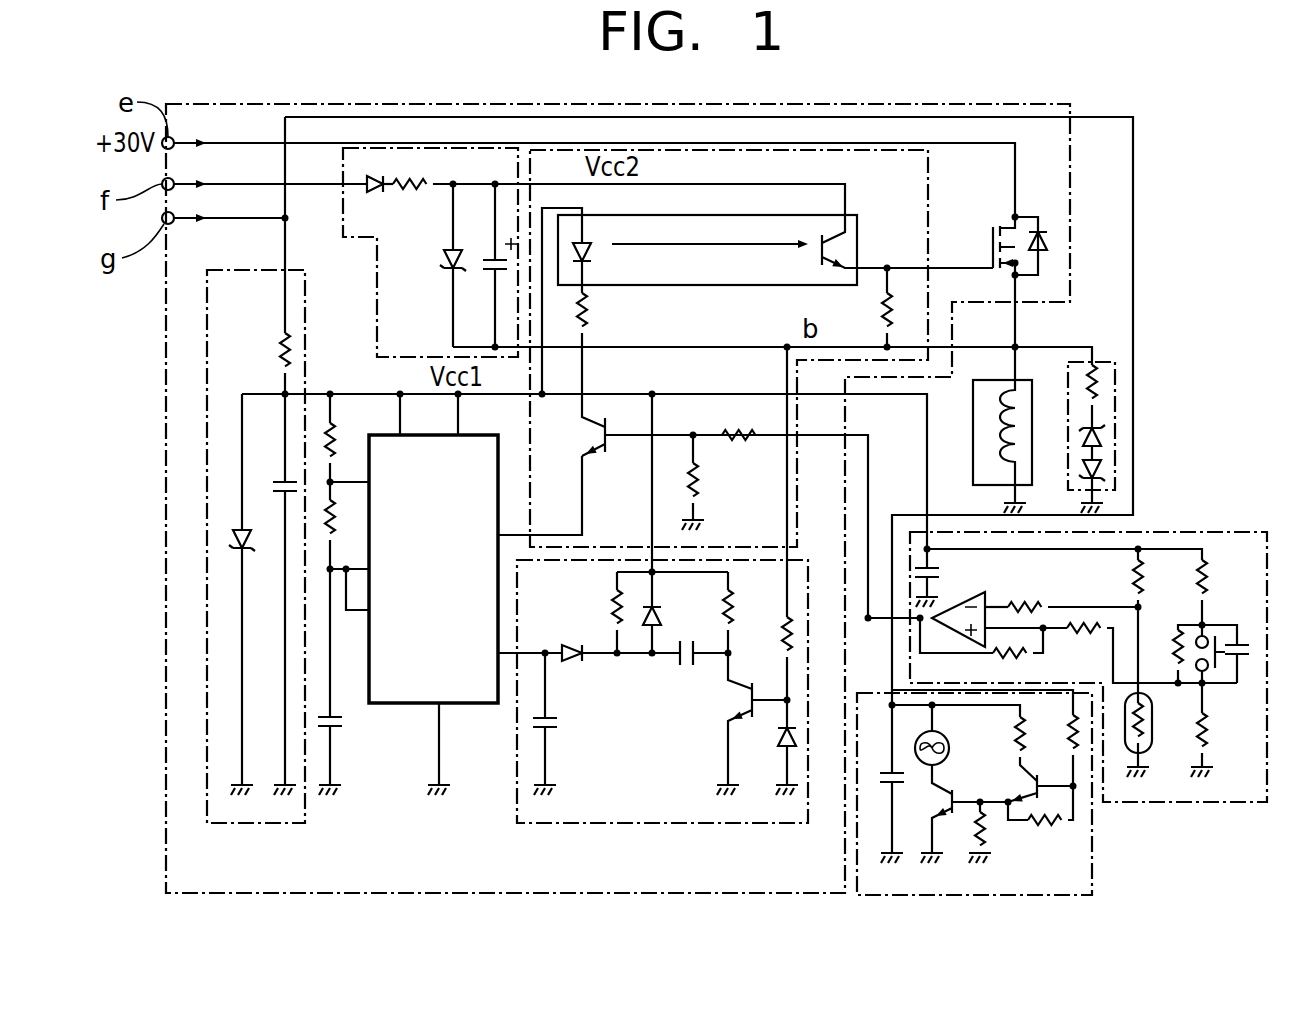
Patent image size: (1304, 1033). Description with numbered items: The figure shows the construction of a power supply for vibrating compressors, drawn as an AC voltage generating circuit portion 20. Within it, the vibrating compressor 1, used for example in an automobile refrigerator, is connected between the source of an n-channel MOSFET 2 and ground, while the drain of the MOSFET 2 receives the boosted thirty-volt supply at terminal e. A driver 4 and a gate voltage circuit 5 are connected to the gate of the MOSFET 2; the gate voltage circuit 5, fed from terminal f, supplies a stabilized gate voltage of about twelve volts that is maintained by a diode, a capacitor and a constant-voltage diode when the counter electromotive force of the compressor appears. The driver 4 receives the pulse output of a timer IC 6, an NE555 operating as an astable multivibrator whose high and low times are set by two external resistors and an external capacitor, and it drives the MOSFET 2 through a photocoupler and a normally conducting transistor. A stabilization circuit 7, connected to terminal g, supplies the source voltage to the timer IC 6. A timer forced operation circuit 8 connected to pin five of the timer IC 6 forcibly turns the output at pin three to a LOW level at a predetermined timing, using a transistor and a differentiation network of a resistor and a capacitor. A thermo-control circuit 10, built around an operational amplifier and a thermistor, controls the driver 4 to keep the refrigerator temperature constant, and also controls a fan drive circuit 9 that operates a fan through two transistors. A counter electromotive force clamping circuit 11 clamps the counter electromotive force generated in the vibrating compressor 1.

The vibrating compressor 1 is at (973, 420).
The MOSFET 2 is at (1022, 216).
The driver 4 is at (928, 176).
The gate voltage circuit 5 is at (377, 352).
The timer IC 6 is at (498, 436).
The stabilization circuit 7 is at (238, 272).
The timer forced operation circuit 8 is at (517, 806).
The fan drive circuit 9 is at (1092, 872).
The thermo-control circuit 10 is at (1213, 803).
The counter electromotive force clamping circuit 11 is at (1115, 412).
The AC voltage generating circuit portion 20 is at (165, 872).